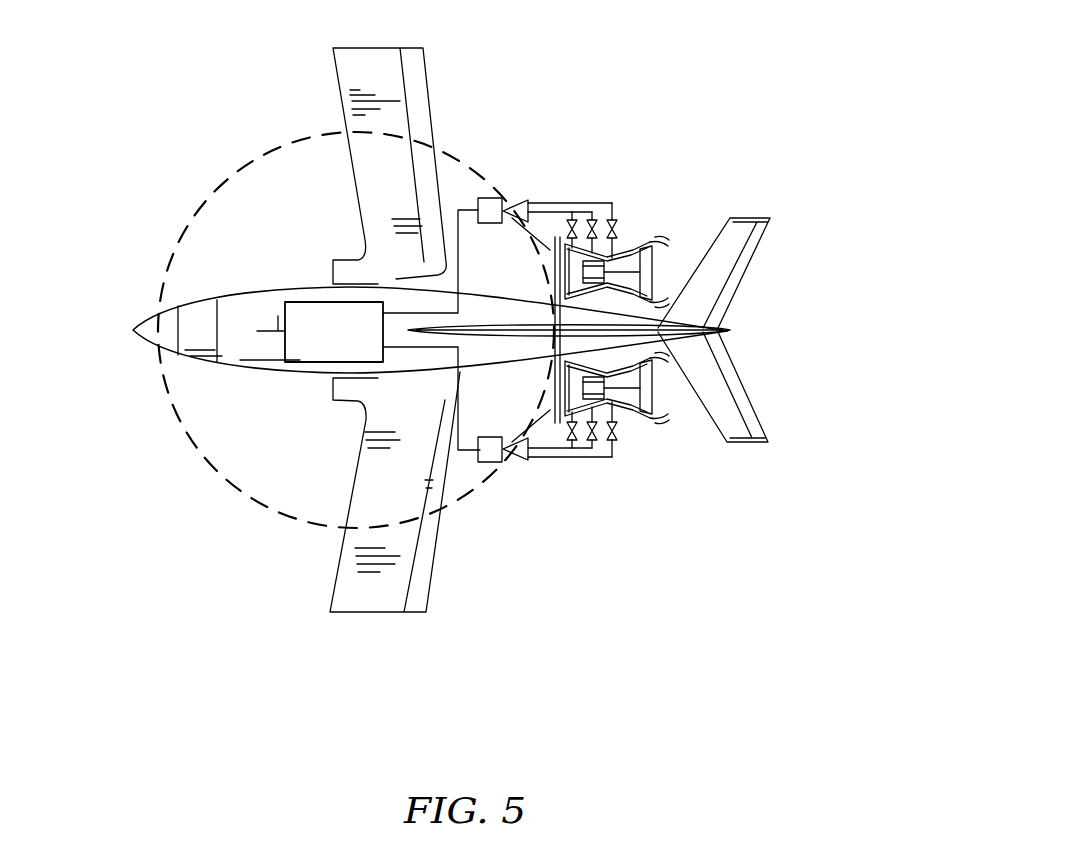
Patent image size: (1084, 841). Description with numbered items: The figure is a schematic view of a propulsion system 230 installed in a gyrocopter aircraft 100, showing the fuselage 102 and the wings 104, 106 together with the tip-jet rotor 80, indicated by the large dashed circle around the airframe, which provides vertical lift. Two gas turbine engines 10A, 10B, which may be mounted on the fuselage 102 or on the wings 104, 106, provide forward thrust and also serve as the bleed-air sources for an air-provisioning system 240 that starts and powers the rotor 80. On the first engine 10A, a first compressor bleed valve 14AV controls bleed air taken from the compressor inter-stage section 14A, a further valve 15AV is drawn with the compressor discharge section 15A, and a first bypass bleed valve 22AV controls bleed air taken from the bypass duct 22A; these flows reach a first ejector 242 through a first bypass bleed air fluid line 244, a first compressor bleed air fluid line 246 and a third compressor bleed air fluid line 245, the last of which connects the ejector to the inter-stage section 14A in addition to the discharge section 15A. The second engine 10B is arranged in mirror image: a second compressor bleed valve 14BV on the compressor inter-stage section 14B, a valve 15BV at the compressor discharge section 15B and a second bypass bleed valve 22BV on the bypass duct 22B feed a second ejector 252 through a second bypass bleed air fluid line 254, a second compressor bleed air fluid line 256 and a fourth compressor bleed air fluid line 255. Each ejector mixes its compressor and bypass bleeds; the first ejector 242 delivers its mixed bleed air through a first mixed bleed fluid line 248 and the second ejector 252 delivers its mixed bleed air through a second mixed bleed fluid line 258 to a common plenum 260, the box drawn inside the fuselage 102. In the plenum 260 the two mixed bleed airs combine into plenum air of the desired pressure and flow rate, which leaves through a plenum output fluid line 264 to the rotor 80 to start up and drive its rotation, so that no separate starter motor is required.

The tip-jet rotor 80 is at (134, 312).
The gyrocopter aircraft 100 is at (213, 192).
The fuselage 102 is at (250, 316).
The wing 104 is at (410, 163).
The wing 106 is at (392, 512).
The plenum 260 is at (313, 300).
The plenum output fluid line 264 is at (281, 318).
The propulsion system 230 is at (835, 112).
The air-provisioning system 240 is at (705, 104).
The first ejector 242 is at (519, 187).
The first bypass bleed air fluid line 244 is at (598, 193).
The third compressor bleed air fluid line 245 is at (554, 195).
The first compressor bleed air fluid line 246 is at (535, 242).
The first mixed bleed fluid line 248 is at (463, 195).
The second ejector 252 is at (513, 467).
The second bypass bleed air fluid line 254 is at (588, 467).
The fourth compressor bleed air fluid line 255 is at (549, 459).
The second compressor bleed air fluid line 256 is at (534, 426).
The second mixed bleed fluid line 258 is at (467, 463).
The first gas turbine engine 10A is at (661, 232).
The second gas turbine engine 10B is at (668, 433).
The compressor inter-stage section 14A is at (566, 286).
The compressor inter-stage section 14B is at (566, 376).
The compressor discharge section 15A is at (640, 262).
The compressor discharge section 15B is at (640, 394).
The bypass duct 22A is at (629, 243).
The bypass duct 22B is at (629, 428).
The first compressor bleed valve 14AV is at (619, 216).
The first nozzle valve 15AV is at (592, 236).
The first bypass bleed valve 22AV is at (612, 239).
The second compressor bleed valve 14BV is at (615, 447).
The second nozzle valve 15BV is at (592, 423).
The second bypass bleed valve 22BV is at (612, 421).